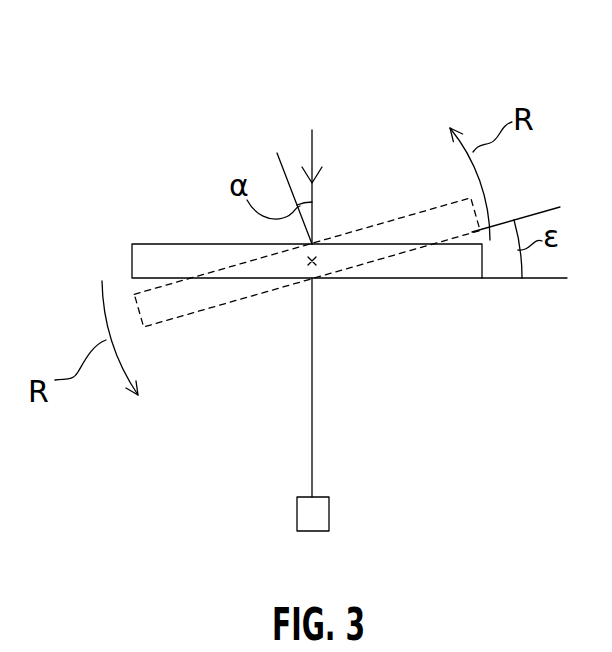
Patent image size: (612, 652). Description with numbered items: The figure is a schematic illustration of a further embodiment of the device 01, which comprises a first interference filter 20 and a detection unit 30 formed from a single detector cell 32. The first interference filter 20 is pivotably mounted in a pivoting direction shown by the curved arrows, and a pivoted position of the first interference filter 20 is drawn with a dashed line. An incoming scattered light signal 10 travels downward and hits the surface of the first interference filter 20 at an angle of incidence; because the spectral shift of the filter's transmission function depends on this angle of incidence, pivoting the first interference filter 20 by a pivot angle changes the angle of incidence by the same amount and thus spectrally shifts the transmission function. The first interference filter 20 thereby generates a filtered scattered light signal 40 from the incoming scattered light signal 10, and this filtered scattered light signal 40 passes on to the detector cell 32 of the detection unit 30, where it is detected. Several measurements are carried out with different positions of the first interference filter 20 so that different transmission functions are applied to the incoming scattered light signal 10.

The device 01 is at (174, 130).
The incoming scattered light signal 10 is at (312, 207).
The first interference filter 20 is at (474, 233).
The filtered scattered light signal 40 is at (312, 387).
The detection unit 30 is at (394, 473).
The detector cell 32 is at (318, 507).